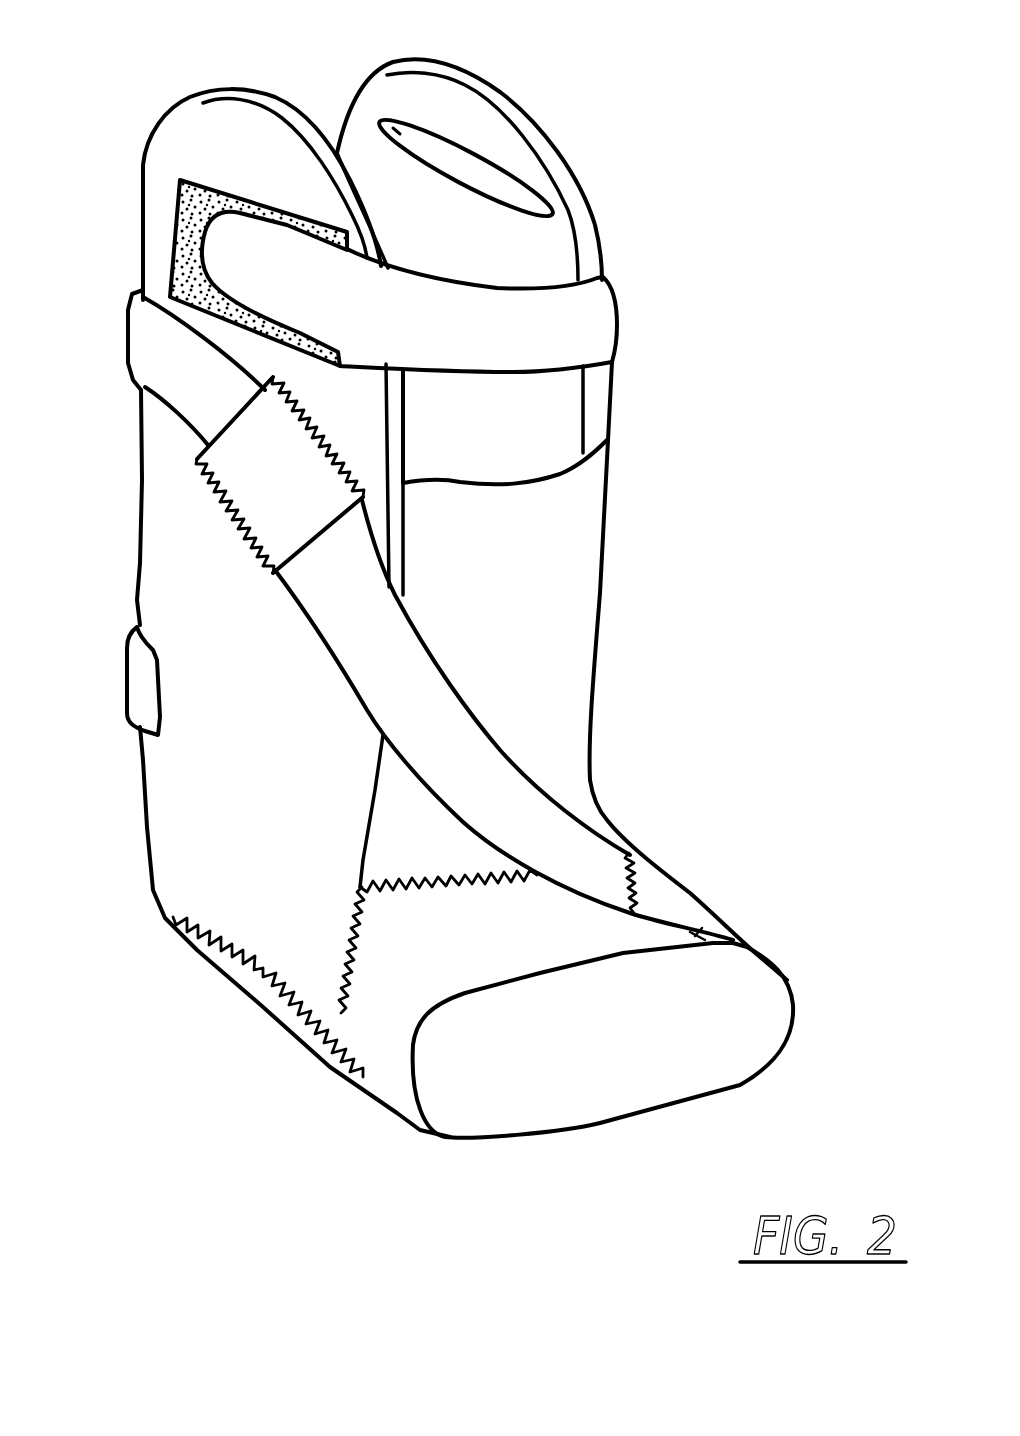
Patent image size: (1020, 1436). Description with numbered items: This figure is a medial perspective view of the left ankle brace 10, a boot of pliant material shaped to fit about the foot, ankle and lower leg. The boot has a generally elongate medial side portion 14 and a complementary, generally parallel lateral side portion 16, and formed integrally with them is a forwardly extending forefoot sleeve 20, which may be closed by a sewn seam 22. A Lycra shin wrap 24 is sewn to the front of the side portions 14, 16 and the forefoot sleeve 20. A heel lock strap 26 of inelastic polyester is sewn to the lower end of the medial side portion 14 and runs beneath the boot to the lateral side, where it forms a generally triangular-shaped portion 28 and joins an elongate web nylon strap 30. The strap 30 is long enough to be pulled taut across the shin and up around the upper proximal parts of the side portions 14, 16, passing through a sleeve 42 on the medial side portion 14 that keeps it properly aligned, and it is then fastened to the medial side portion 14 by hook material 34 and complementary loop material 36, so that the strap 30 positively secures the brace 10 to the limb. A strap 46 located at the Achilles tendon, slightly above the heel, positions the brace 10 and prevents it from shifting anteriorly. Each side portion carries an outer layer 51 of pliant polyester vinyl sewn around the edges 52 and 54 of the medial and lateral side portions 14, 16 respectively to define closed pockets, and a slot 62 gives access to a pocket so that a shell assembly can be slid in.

The ankle brace 10 is at (663, 163).
The medial side portion 14 is at (190, 118).
The lateral side portion 16 is at (557, 165).
The slot 62 is at (382, 114).
The hook material 34 is at (187, 200).
The loop material 36 is at (223, 250).
The sleeve 42 is at (227, 460).
The edge 54 is at (615, 388).
The shin wrap 24 is at (567, 528).
The edge 52 is at (375, 790).
The outer layer 51 is at (273, 705).
The strap 46 is at (142, 695).
The elongate strap 30 is at (470, 738).
The triangular-shaped portion 28 is at (660, 888).
The sewn seam 22 is at (703, 930).
The forefoot sleeve 20 is at (387, 1057).
The heel lock strap 26 is at (265, 1012).